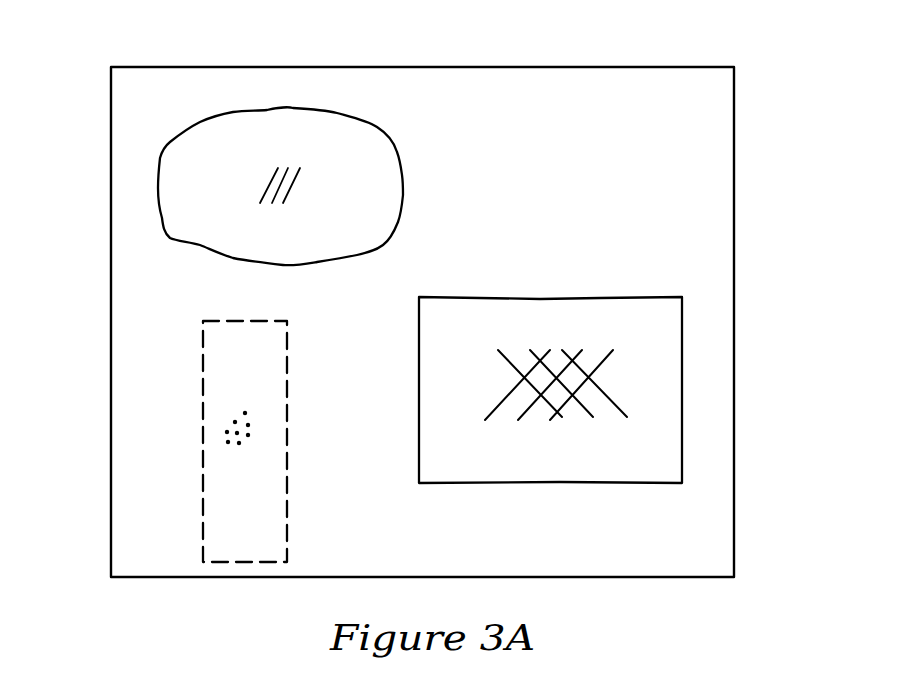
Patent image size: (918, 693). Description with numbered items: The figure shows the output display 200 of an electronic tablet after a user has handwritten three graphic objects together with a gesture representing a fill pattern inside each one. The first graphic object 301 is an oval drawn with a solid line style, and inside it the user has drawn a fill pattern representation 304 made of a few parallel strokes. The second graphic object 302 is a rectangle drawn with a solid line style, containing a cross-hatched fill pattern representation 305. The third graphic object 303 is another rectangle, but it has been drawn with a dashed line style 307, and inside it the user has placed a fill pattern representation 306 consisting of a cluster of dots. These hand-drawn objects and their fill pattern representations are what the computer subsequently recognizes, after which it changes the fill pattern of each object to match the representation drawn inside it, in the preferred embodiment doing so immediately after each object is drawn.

The output display 200 is at (111, 117).
The graphic object 301 is at (267, 110).
The graphic object 302 is at (668, 309).
The graphic object 303 is at (215, 478).
The fill pattern representation 304 is at (265, 187).
The fill pattern representation 305 is at (597, 373).
The fill pattern representation 306 is at (239, 443).
The dashed line style 307 is at (285, 520).